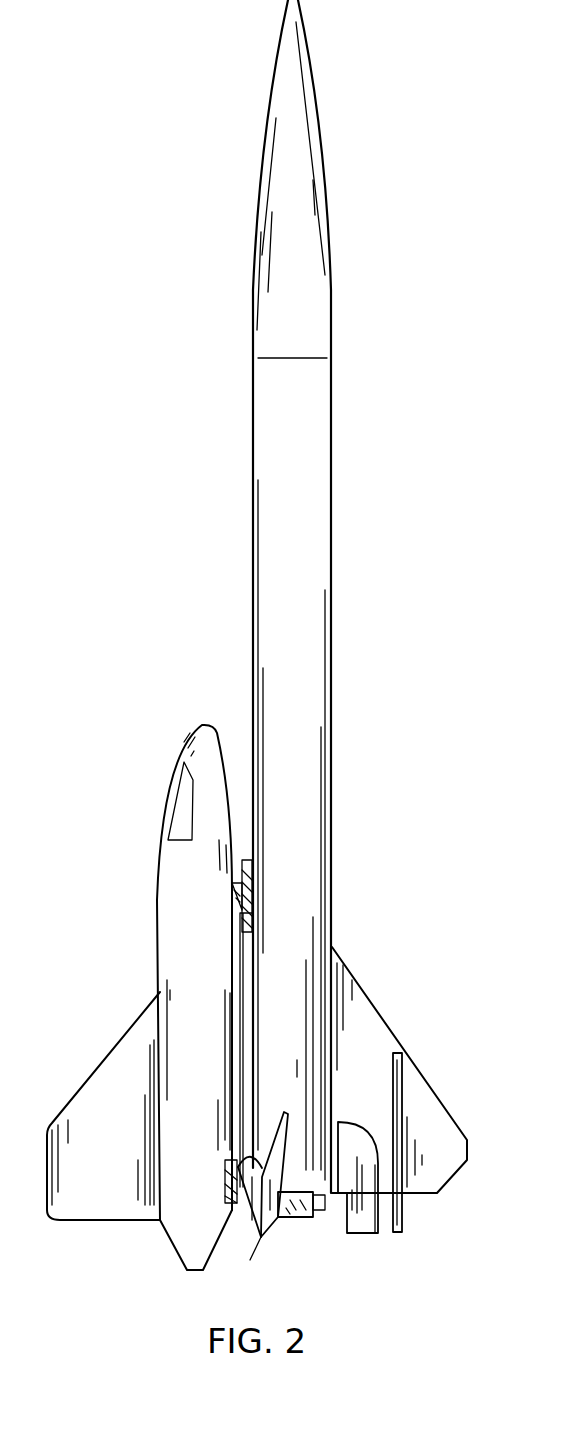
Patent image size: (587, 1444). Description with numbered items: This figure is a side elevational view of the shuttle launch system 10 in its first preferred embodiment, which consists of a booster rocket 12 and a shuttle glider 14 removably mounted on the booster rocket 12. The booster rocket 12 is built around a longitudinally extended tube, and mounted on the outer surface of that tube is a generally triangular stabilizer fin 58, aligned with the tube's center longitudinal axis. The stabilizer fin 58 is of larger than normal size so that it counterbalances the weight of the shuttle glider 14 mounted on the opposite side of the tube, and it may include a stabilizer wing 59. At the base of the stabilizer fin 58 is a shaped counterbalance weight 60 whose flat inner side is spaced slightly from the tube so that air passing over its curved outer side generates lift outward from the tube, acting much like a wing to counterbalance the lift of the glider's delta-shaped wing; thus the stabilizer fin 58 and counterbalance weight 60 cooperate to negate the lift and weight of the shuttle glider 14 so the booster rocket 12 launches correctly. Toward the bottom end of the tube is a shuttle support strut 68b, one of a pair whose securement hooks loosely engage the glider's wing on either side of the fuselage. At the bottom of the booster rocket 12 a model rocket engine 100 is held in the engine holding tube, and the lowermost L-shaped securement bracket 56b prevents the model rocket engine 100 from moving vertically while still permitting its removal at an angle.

The shuttle launch system 10 is at (274, 659).
The booster rocket 12 is at (297, 682).
The shuttle glider 14 is at (274, 1021).
The stabilizer fin 58 is at (365, 1048).
The stabilizer wing 59 is at (402, 1213).
The shaped counterbalance weight 60 is at (423, 1180).
The shuttle support strut 68b is at (265, 1233).
The model rocket engine 100 is at (293, 1205).
The L-shaped securement bracket 56b is at (365, 1215).